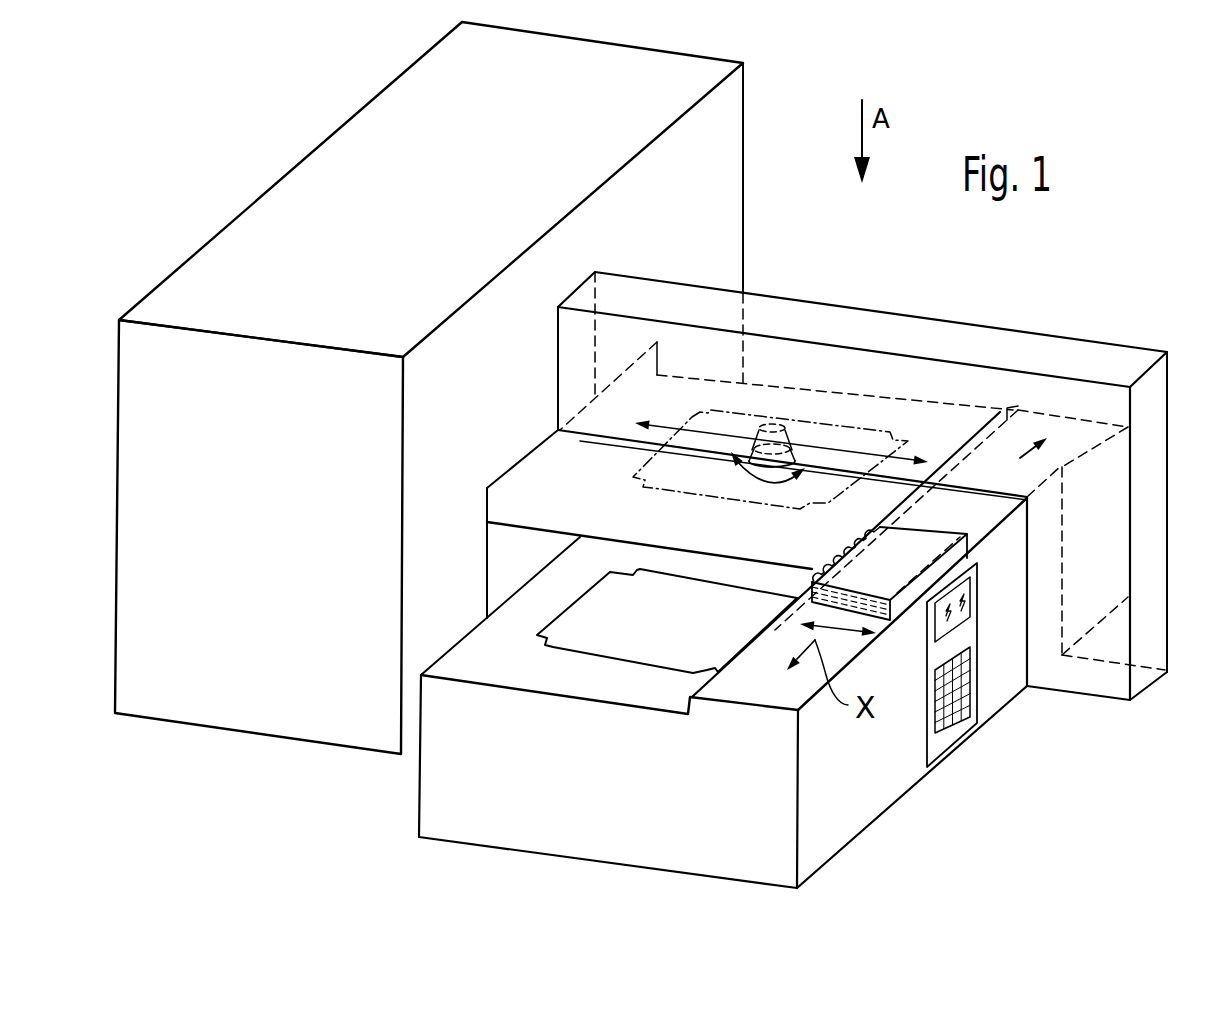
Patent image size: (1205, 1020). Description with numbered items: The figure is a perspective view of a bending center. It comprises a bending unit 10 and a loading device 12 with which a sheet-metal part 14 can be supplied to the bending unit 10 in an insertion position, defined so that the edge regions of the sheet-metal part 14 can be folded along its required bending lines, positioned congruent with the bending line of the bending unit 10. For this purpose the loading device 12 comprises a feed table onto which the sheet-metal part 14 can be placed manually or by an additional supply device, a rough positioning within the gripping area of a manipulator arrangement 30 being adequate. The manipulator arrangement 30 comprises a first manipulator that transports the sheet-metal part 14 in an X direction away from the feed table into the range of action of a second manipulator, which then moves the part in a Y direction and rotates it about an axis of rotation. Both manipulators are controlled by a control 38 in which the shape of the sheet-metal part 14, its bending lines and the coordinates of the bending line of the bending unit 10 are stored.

The bending unit 10 is at (715, 138).
The loading device 12 is at (898, 805).
The sheet-metal part 14 is at (605, 603).
The manipulator arrangement 30 is at (938, 523).
The control 38 is at (970, 720).